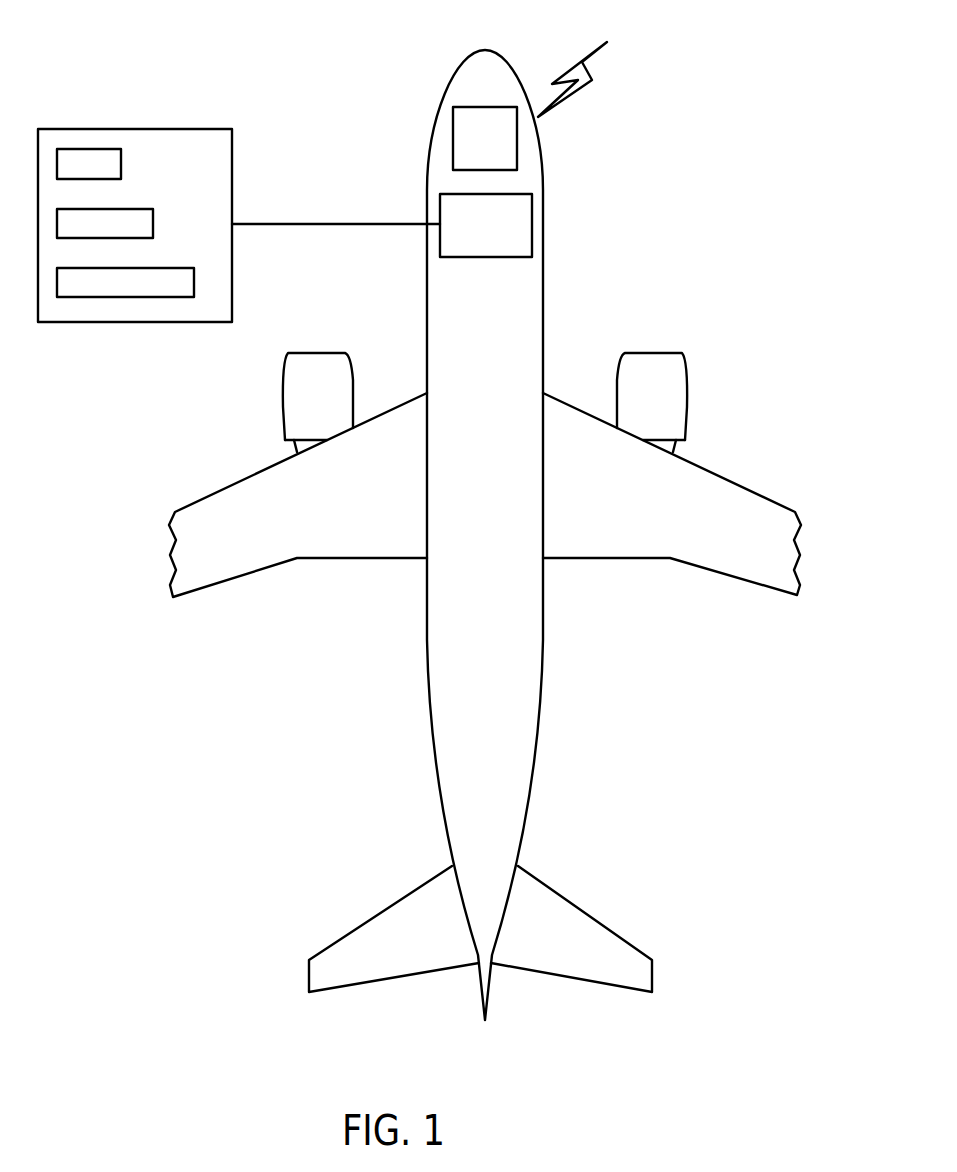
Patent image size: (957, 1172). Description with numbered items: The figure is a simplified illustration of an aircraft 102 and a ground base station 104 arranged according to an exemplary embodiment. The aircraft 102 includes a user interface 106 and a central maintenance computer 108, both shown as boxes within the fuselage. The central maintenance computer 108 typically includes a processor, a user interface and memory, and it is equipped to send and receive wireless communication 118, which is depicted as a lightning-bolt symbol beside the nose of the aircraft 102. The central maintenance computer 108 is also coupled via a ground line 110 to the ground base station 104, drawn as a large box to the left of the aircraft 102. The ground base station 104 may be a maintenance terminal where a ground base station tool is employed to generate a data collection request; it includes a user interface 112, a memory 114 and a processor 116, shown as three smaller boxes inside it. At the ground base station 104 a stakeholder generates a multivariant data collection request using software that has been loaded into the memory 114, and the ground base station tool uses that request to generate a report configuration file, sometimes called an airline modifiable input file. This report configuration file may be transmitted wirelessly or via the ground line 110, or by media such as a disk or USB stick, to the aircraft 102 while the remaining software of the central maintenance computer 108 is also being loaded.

The aircraft 102 is at (713, 476).
The ground base station 104 is at (150, 128).
The user interface 106 is at (453, 128).
The central maintenance computer 108 is at (485, 258).
The ground line 110 is at (318, 222).
The user interface 112 is at (121, 163).
The memory 114 is at (153, 222).
The processor 116 is at (137, 298).
The wireless communication 118 is at (578, 58).